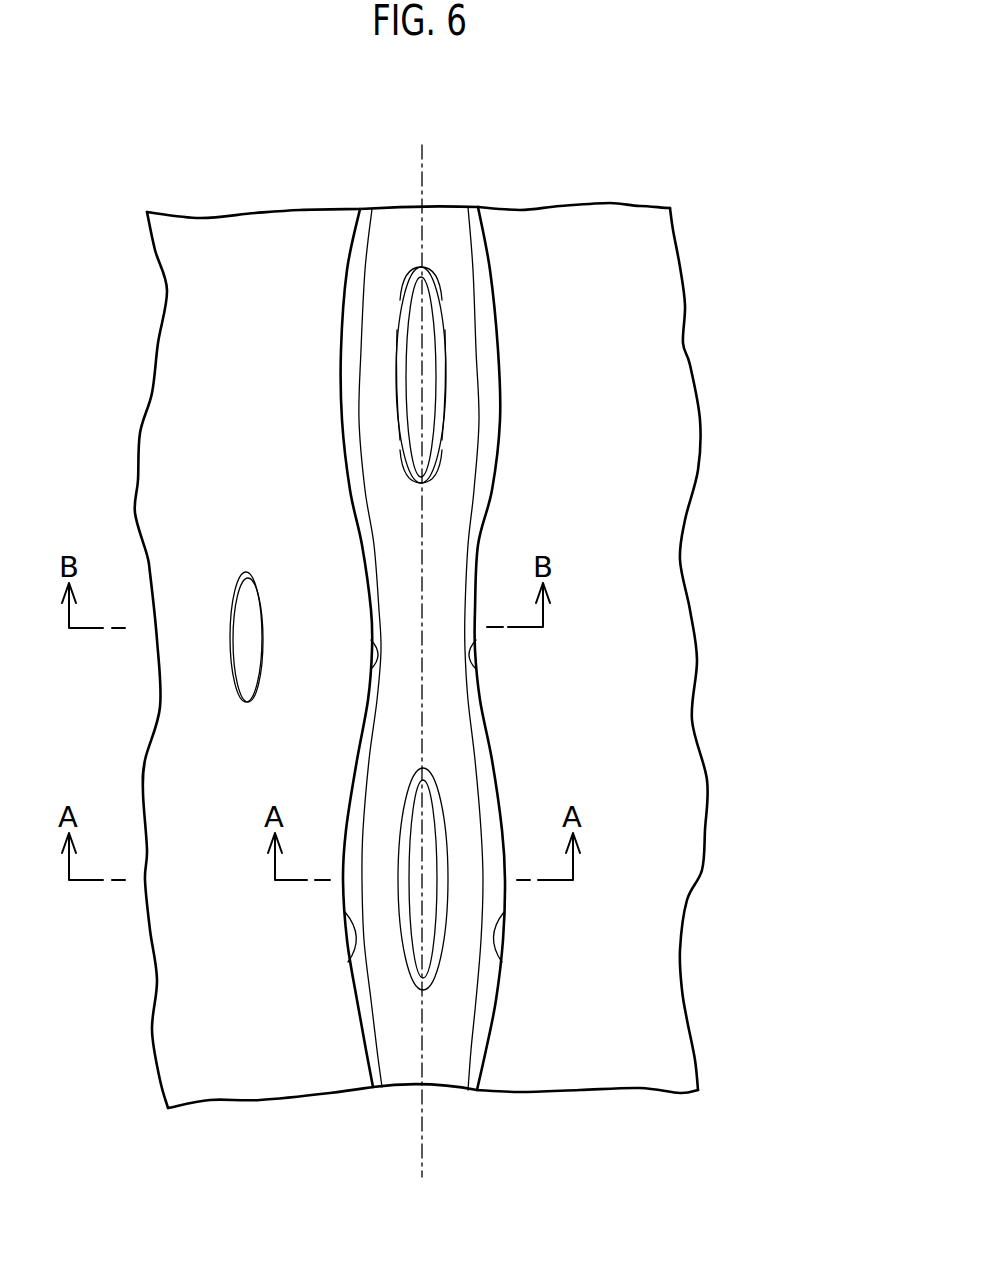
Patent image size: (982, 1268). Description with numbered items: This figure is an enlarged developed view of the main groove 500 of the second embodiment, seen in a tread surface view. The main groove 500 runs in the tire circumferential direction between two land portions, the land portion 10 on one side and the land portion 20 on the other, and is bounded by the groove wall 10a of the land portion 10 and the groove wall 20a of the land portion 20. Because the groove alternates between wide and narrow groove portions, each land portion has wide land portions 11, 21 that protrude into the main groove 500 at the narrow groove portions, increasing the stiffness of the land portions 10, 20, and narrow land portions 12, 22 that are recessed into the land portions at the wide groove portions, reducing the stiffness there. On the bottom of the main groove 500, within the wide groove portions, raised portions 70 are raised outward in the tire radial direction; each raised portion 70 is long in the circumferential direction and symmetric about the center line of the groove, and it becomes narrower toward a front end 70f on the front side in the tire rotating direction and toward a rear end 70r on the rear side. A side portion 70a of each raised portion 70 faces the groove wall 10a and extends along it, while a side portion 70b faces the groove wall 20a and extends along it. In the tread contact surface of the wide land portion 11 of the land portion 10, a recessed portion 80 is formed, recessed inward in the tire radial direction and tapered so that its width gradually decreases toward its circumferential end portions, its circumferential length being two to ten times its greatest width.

The main groove 500 is at (443, 194).
The land portion 10 is at (258, 230).
The land portion 20 is at (592, 228).
The groove wall 10a is at (348, 300).
The groove wall 20a is at (488, 304).
The raised portion 70 is at (430, 383).
The rear end 70r is at (430, 278).
The front end 70f is at (430, 477).
The side portion 70a is at (403, 432).
The side portion 70b is at (438, 447).
The recessed portion 80 is at (237, 637).
The wide land portion 11 is at (372, 667).
The wide land portion 21 is at (464, 667).
The narrow land portion 12 is at (346, 962).
The narrow land portion 22 is at (504, 962).